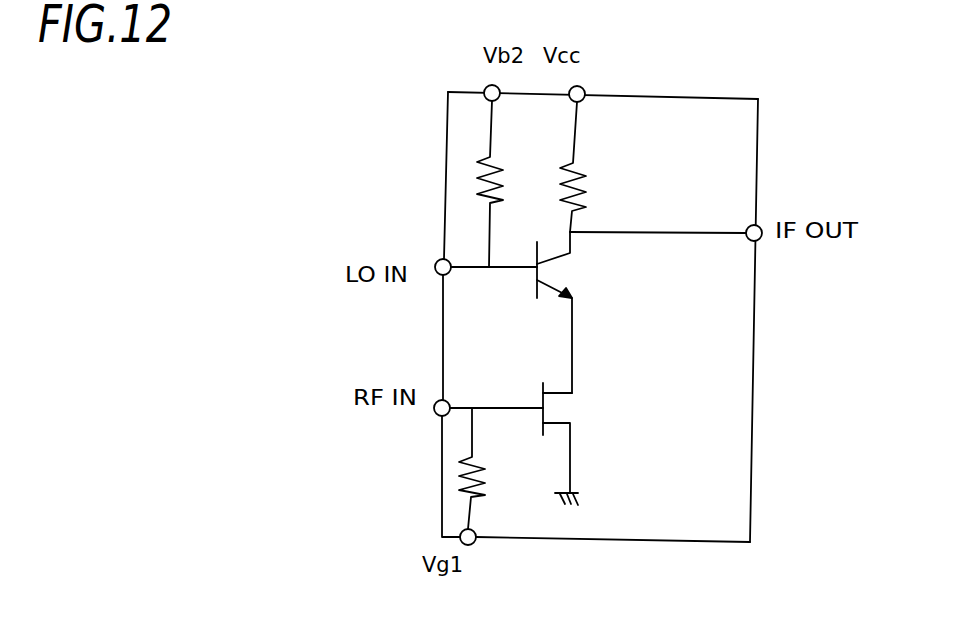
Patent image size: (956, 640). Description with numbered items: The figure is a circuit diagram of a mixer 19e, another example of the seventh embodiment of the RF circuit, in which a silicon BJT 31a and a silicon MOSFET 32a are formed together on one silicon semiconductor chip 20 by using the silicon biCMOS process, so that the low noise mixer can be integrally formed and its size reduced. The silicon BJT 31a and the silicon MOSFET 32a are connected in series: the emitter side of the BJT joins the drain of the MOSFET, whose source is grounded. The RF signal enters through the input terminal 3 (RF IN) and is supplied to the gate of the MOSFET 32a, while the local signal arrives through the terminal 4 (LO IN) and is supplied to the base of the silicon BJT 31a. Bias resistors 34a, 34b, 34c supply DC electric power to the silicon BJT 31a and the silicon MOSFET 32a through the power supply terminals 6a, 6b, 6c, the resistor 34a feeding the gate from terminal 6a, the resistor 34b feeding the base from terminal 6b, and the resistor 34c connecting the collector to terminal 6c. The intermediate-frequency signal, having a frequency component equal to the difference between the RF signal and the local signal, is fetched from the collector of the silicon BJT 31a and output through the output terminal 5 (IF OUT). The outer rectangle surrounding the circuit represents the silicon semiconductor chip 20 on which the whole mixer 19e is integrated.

The input terminal (RF IN) 3 is at (436, 412).
The local signal input terminal (LO IN) 4 is at (441, 258).
The output terminal (IF OUT) 5 is at (757, 241).
The power supply terminal 6a is at (476, 543).
The power supply terminal 6b is at (485, 85).
The power supply terminal 6c is at (586, 87).
The mixer 19e is at (800, 114).
The silicon semiconductor chip 20 is at (751, 465).
The silicon BJT 31a is at (573, 276).
The silicon MOSFET 32a is at (572, 410).
The bias resistor 34a is at (476, 458).
The bias resistor 34b is at (481, 163).
The bias resistor 34c is at (587, 188).